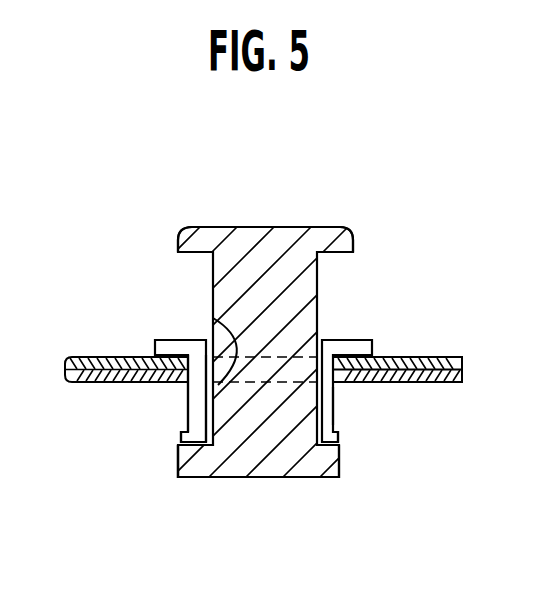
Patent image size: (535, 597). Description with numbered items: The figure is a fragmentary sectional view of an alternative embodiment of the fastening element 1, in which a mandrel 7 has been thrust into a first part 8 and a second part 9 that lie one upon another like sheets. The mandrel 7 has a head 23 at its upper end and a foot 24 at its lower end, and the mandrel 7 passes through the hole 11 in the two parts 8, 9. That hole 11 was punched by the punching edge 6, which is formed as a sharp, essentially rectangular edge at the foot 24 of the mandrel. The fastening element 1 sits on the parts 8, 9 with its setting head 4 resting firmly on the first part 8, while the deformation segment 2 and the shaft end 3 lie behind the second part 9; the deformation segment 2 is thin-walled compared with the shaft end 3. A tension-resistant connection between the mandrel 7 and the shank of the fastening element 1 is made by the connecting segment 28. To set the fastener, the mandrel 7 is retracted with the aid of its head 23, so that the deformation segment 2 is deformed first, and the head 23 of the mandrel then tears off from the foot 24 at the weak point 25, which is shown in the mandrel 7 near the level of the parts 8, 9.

The fastening element 1 is at (153, 338).
The deformation segment 2 is at (353, 387).
The shaft end 3 is at (340, 433).
The setting head 4 is at (352, 338).
The punching edge 6 is at (173, 481).
The mandrel 7 is at (307, 290).
The first part 8 is at (92, 357).
The second part 9 is at (98, 383).
The hole 11 is at (183, 391).
The head of the mandrel 23 is at (293, 238).
The foot of the mandrel 24 is at (240, 463).
The weak point 25 is at (214, 332).
The connecting segment 28 is at (178, 446).